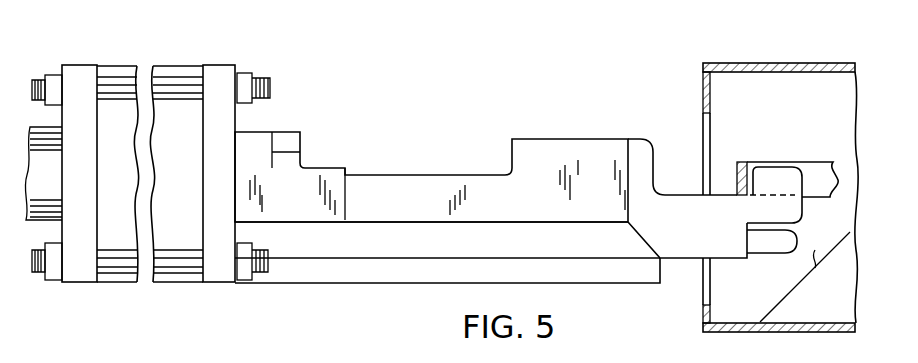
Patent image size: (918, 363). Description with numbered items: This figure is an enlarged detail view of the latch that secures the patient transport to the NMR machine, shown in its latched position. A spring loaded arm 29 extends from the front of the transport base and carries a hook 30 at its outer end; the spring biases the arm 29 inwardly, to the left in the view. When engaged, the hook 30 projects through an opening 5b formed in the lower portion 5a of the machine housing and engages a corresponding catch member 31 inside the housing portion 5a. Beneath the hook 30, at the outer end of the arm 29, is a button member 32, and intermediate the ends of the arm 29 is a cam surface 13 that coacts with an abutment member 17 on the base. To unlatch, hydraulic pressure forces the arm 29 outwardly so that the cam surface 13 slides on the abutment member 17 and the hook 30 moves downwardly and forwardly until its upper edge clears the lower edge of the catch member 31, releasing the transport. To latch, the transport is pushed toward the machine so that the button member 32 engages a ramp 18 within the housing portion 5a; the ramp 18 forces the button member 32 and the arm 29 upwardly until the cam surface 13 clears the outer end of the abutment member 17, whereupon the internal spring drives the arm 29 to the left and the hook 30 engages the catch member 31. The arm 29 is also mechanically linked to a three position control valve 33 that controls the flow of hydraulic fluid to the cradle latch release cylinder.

The lower portion of housing 5a is at (781, 63).
The opening 5b is at (703, 118).
The cam surface 13 is at (643, 240).
The abutment member 17 is at (383, 285).
The ramp 18 is at (843, 250).
The spring loaded arm 29 is at (406, 174).
The hook 30 is at (783, 167).
The catch member 31 is at (823, 168).
The button member 32 is at (768, 259).
The three position control valve 33 is at (177, 285).